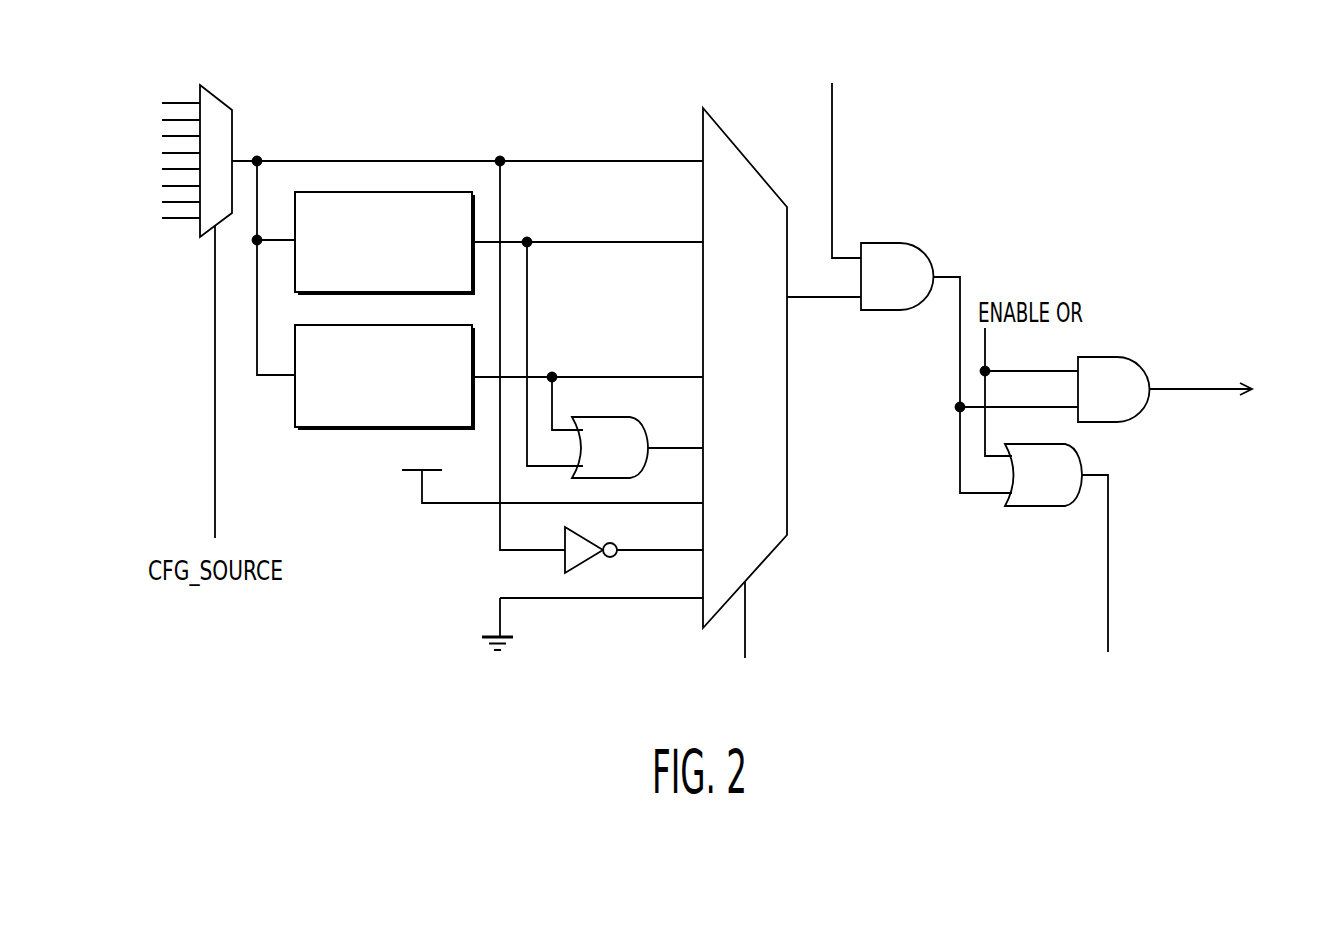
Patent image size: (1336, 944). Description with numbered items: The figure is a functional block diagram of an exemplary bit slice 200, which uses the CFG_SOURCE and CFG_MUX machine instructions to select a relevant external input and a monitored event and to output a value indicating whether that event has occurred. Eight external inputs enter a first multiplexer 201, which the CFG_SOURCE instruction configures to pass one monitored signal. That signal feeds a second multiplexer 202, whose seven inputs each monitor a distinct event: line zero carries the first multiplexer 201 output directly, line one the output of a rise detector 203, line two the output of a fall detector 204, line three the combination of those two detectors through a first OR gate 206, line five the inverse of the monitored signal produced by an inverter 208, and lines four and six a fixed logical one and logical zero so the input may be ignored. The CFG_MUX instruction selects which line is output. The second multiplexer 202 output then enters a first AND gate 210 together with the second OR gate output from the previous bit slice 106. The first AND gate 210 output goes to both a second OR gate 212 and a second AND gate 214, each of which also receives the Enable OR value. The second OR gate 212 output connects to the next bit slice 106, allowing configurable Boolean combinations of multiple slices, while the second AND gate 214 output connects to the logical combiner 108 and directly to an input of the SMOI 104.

The bit slice 200 is at (227, 71).
The first multiplexer 201 is at (232, 128).
The second multiplexer 202 is at (764, 402).
The rise detector 203 is at (400, 281).
The fall detector 204 is at (400, 415).
The first OR gate 206 is at (632, 461).
The inverter 208 is at (546, 561).
The first AND gate 210 is at (915, 290).
The second OR gate 212 is at (1067, 489).
The second AND gate 214 is at (1132, 402).
The bit slices 106 is at (969, 78).
The logical combiner 108 is at (1284, 348).
The SMOI 104 is at (1308, 381).